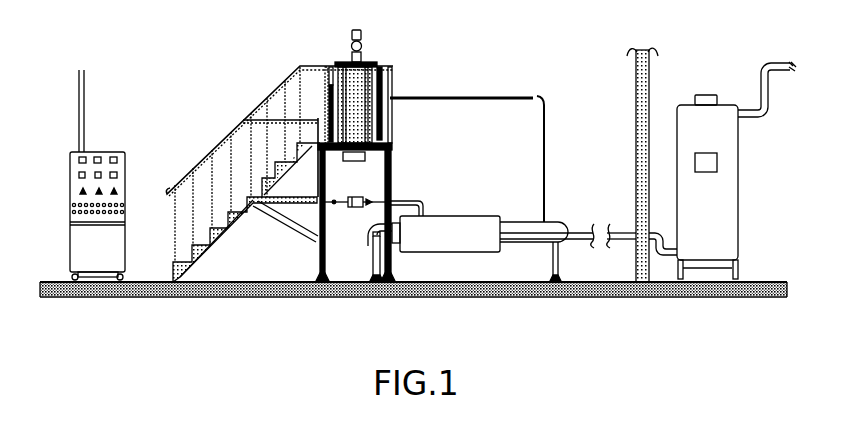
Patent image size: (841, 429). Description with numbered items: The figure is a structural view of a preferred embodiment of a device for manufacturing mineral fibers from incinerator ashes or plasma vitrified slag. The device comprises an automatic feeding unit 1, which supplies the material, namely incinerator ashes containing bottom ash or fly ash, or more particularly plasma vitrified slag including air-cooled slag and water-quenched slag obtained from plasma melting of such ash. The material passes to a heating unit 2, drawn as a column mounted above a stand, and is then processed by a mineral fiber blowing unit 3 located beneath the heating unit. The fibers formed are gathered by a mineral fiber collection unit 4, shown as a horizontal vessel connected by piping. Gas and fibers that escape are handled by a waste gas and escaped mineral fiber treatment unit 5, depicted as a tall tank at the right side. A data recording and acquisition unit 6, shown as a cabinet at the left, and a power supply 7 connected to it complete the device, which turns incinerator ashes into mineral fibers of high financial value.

The automatic feeding unit 1 is at (380, 44).
The heating unit 2 is at (393, 89).
The mineral fiber blowing unit 3 is at (350, 224).
The mineral fiber collection unit 4 is at (454, 200).
The waste gas and escaped mineral fiber treatment unit 5 is at (720, 84).
The data recording and acquisition unit 6 is at (103, 139).
The power supply 7 is at (64, 100).